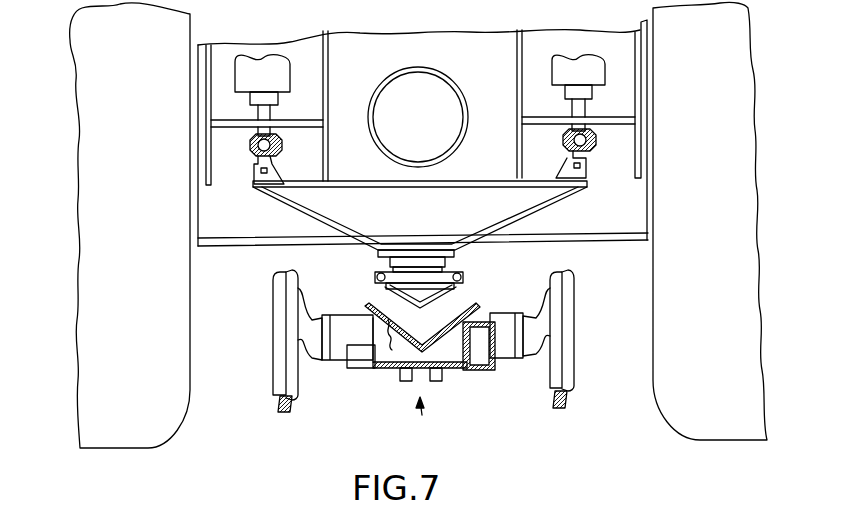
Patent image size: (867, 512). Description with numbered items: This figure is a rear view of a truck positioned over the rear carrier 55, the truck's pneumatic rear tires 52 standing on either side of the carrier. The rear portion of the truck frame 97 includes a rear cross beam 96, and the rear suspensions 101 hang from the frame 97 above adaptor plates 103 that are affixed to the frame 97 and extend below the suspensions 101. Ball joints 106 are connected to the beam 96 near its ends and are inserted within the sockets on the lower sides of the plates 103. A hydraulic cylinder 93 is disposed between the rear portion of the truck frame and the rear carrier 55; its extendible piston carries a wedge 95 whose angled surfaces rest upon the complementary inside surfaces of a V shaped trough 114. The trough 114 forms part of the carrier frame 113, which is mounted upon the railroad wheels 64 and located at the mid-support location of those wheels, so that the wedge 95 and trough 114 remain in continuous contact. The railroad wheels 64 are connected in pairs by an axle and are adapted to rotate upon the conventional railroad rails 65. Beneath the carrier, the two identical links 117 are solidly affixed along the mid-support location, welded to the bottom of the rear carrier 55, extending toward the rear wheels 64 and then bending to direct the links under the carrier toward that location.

The pneumatic rear tires 52 is at (77, 202).
The frame 97 is at (329, 67).
The rear suspensions 101 is at (260, 62).
The adaptor plates 103 is at (316, 132).
The ball joints 106 is at (255, 158).
The rear cross beam 96 is at (542, 209).
The hydraulic cylinder 93 is at (450, 257).
The wedge 95 is at (428, 297).
The V shaped trough 114 is at (390, 311).
The frame 113 is at (368, 374).
The links 117 is at (404, 386).
The railroad wheels 64 is at (272, 330).
The railroad rails 65 is at (280, 400).
The rear carrier 55 is at (422, 415).